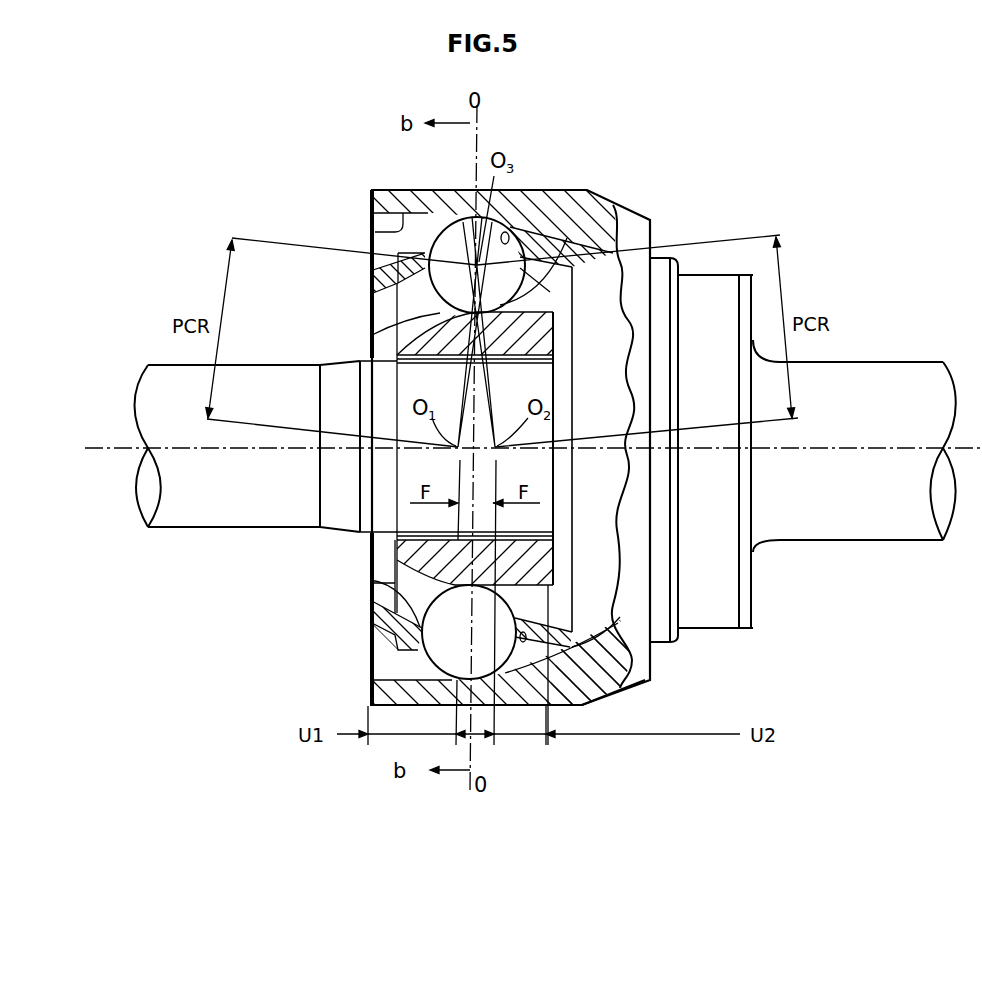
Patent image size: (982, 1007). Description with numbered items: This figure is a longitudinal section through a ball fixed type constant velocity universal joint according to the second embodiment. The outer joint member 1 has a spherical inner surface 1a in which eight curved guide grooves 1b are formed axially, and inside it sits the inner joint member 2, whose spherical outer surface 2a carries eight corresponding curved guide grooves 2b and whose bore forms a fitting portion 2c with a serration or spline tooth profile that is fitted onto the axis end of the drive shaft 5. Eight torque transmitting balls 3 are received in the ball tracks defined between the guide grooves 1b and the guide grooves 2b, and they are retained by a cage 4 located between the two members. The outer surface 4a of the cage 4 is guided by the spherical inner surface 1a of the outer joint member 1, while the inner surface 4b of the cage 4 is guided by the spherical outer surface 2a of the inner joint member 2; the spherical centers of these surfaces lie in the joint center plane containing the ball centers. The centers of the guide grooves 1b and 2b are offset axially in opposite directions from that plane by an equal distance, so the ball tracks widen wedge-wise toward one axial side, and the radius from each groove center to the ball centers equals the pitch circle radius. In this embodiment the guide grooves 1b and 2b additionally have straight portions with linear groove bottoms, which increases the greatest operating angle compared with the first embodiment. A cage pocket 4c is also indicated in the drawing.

The outer joint member 1 is at (372, 192).
The spherical inner surface 1a is at (550, 706).
The guide grooves 1b is at (395, 230).
The inner joint member 2 is at (391, 303).
The spherical outer surface 2a is at (612, 686).
The guide grooves 2b is at (444, 323).
The fitting portion 2c is at (548, 527).
The torque transmitting balls 3 is at (443, 215).
The cage 4 is at (546, 251).
The outer surface 4a is at (392, 636).
The inner surface 4b is at (385, 590).
The cage pocket 4c is at (507, 233).
The drive shaft 5 is at (160, 368).